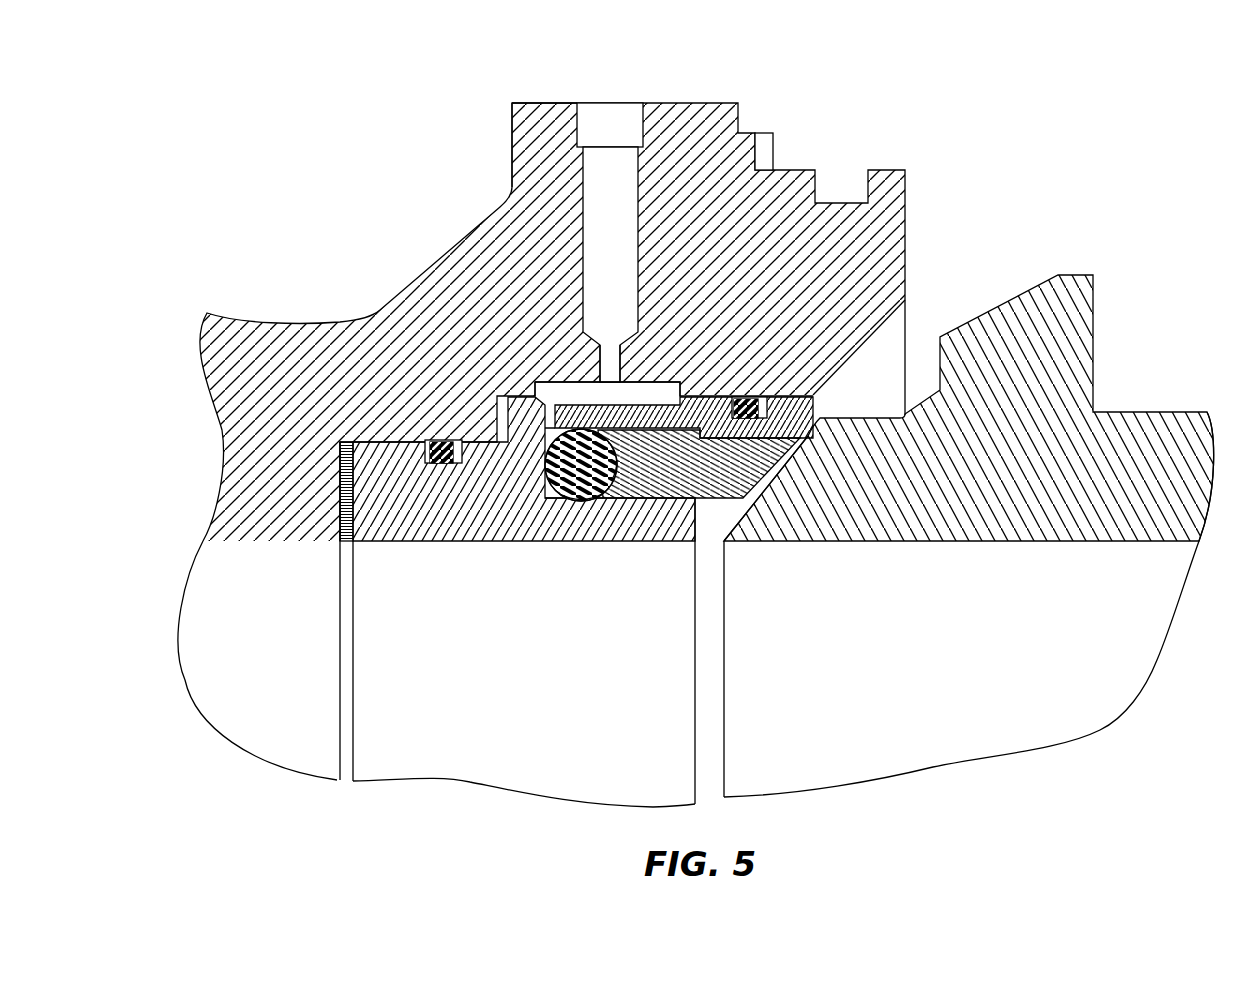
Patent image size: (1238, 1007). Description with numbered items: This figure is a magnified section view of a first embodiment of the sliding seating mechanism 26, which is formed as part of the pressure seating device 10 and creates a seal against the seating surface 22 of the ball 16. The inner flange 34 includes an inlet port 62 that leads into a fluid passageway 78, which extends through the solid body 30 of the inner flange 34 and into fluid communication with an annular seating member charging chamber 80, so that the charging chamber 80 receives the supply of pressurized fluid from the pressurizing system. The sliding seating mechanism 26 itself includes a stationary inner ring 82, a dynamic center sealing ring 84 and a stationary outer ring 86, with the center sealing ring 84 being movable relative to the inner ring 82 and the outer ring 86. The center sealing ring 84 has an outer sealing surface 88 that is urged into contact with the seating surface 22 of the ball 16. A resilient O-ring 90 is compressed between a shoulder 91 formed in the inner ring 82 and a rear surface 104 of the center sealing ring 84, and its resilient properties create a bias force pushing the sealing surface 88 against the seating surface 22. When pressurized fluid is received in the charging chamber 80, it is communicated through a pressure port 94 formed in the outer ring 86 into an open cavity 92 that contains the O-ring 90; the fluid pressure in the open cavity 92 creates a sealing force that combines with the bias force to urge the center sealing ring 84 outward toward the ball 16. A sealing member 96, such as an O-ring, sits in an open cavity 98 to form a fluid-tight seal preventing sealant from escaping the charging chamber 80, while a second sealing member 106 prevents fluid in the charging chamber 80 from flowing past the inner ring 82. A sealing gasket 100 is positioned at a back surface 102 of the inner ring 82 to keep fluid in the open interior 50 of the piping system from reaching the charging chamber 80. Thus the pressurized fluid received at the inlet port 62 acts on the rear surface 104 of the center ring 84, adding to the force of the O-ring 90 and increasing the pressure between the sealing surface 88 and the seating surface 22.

The pressure seating device 10 is at (315, 256).
The ball 16 is at (969, 446).
The seating surface 22 is at (714, 375).
The sliding seating mechanism 26 is at (537, 550).
The solid body 30 is at (443, 287).
The inner flange 34 is at (538, 120).
The open interior 50 is at (688, 652).
The inlet port 62 is at (605, 118).
The fluid passageway 78 is at (620, 170).
The annular seating member charging chamber 80 is at (605, 393).
The stationary inner ring 82 is at (538, 521).
The dynamic center sealing ring 84 is at (665, 498).
The stationary outer ring 86 is at (818, 383).
The outer sealing surface 88 is at (778, 490).
The resilient O-ring 90 is at (610, 527).
The shoulder 91 is at (536, 465).
The open cavity 92 is at (565, 497).
The pressure port 94 is at (553, 402).
The sealing member 96 is at (748, 397).
The open cavity 98 is at (766, 395).
The sealing gasket 100 is at (337, 509).
The back surface 102 is at (348, 500).
The rear surface 104 is at (622, 500).
The second sealing member 106 is at (452, 463).